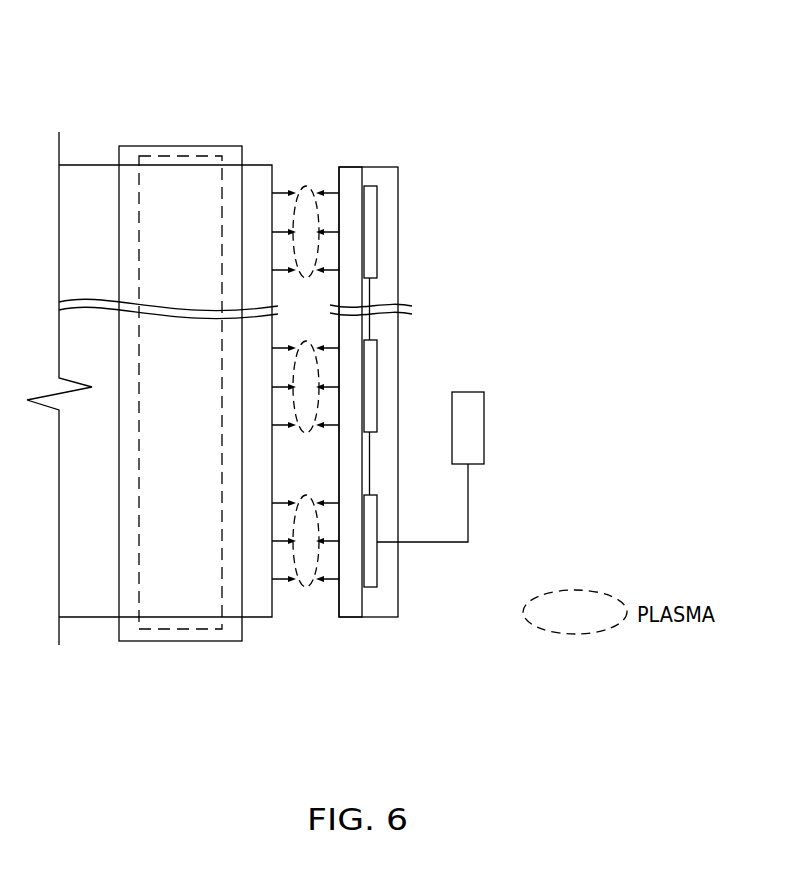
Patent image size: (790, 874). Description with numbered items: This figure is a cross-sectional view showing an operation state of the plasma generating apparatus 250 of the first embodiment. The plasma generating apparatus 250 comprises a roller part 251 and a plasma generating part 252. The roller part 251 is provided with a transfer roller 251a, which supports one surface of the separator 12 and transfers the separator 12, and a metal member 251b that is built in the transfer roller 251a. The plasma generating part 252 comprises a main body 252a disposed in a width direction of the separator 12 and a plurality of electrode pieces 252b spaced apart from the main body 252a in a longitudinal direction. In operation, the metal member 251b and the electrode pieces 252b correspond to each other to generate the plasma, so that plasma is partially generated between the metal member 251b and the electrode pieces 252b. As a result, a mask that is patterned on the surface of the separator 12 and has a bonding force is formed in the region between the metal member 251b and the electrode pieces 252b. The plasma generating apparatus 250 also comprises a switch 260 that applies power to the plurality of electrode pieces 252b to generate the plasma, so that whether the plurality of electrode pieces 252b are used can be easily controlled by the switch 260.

The separator 12 is at (90, 617).
The plasma generating apparatus 250 is at (510, 220).
The roller part 251 is at (260, 66).
The transfer roller 251a is at (185, 145).
The metal member 251b is at (210, 155).
The plasma generating part 252 is at (455, 85).
The main body 252a is at (354, 172).
The electrode pieces 252b is at (372, 222).
The switch 260 is at (484, 427).